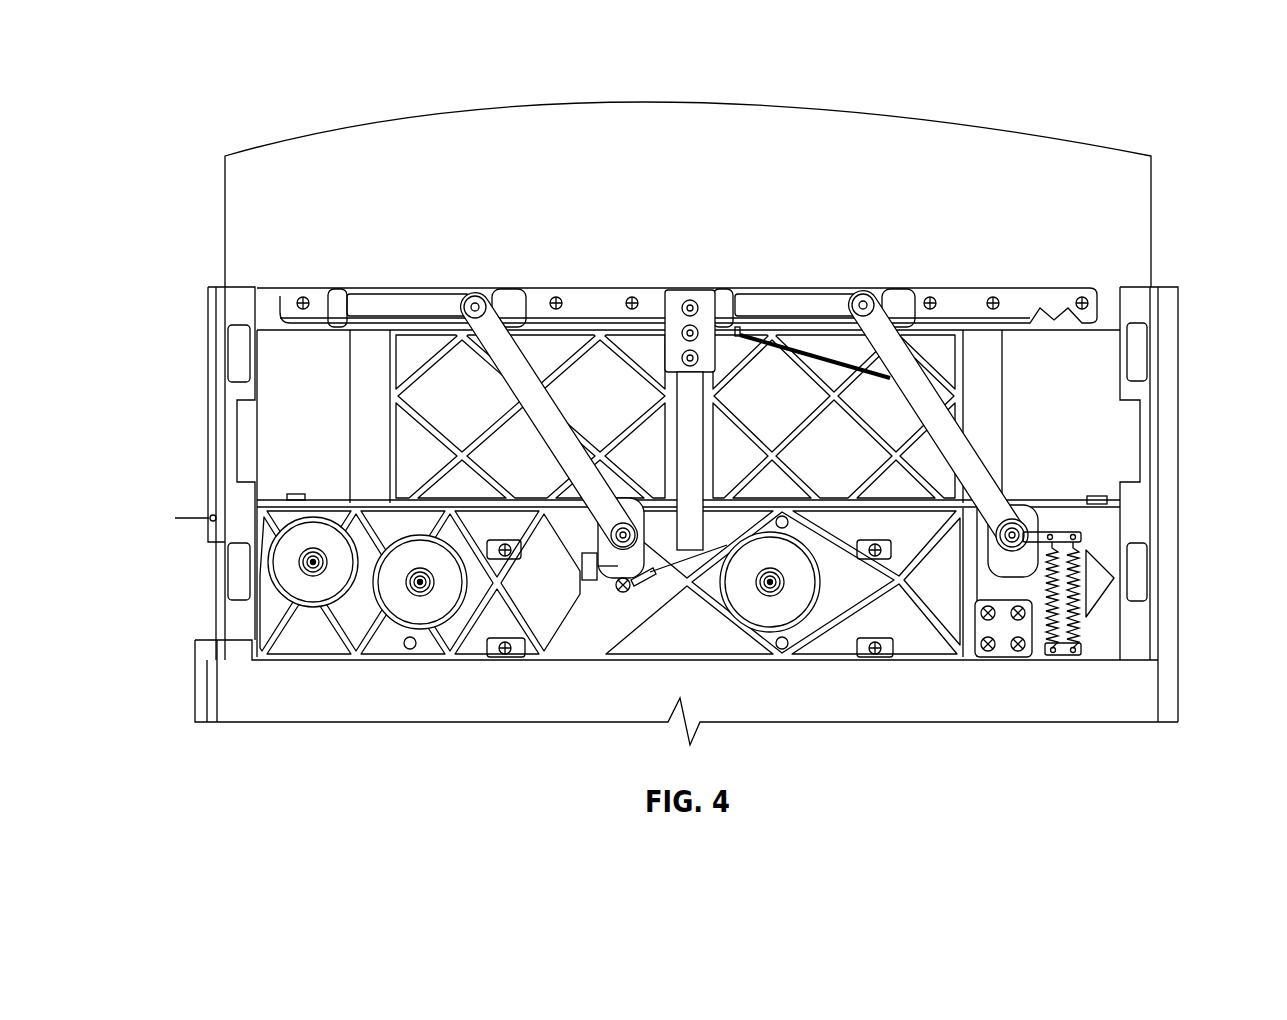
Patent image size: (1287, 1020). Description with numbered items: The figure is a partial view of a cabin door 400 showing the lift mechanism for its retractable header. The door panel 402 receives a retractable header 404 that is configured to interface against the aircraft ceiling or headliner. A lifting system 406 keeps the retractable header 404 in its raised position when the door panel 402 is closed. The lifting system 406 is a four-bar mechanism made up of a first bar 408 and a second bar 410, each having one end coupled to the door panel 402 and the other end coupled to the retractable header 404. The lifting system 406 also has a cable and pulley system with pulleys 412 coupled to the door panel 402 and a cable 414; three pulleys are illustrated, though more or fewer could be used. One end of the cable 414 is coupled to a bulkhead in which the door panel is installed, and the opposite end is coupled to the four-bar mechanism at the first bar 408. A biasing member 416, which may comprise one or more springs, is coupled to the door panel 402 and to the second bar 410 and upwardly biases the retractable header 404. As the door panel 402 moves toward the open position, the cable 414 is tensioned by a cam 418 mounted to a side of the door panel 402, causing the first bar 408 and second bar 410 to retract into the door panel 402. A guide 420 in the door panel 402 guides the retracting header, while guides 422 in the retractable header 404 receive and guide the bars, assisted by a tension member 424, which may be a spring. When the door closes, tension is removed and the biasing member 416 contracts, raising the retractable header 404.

The cabin door 400 is at (299, 84).
The door panel 402 is at (1117, 437).
The retractable header 404 is at (1027, 137).
The lifting system 406 is at (594, 704).
The first bar 408 is at (518, 373).
The second bar 410 is at (878, 325).
The pulleys 412 is at (313, 520).
The cable 414 is at (670, 630).
The biasing member 416 is at (1080, 623).
The cam 418 is at (212, 388).
The guide 420 is at (687, 428).
The guides 422 is at (417, 307).
The tension member 424 is at (785, 358).